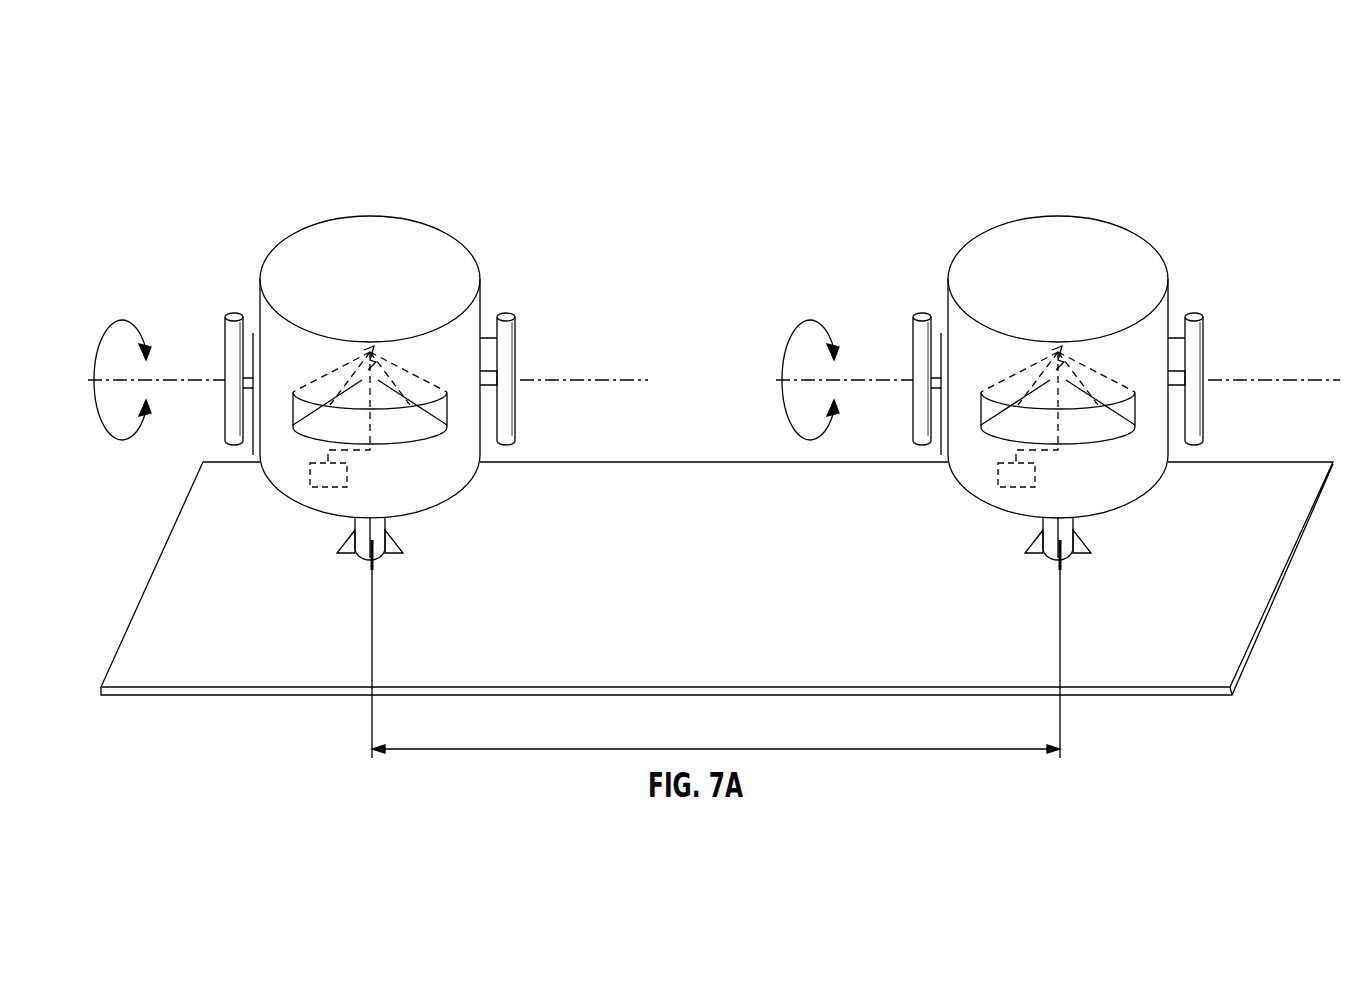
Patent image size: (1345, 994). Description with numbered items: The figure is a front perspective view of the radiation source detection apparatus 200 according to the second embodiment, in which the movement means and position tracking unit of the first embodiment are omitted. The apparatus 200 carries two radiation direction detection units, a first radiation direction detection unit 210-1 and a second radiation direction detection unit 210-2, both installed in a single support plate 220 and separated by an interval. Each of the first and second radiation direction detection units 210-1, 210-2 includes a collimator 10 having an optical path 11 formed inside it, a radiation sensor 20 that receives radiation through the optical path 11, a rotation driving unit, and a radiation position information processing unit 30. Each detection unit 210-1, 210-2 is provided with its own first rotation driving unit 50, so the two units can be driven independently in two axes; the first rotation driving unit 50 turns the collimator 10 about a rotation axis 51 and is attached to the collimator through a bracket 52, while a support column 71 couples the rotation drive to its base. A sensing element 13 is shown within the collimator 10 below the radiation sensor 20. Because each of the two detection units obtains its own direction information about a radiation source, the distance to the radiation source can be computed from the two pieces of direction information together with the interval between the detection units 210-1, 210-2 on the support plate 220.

The radiation source detection apparatus 200 is at (706, 134).
The first radiation direction detection unit 210-1 is at (442, 208).
The second radiation direction detection unit 210-2 is at (991, 209).
The support plate 220 is at (1237, 636).
The collimator 10 is at (298, 243).
The optical path 11 is at (432, 408).
The sensor 13 is at (673, 472).
The radiation sensor 20 is at (372, 345).
The radiation position information processing unit 30 is at (318, 482).
The first rotation driving unit 50 is at (240, 378).
The rotation axis 51 is at (612, 378).
The bracket 52 is at (252, 350).
The support column 71 is at (366, 557).